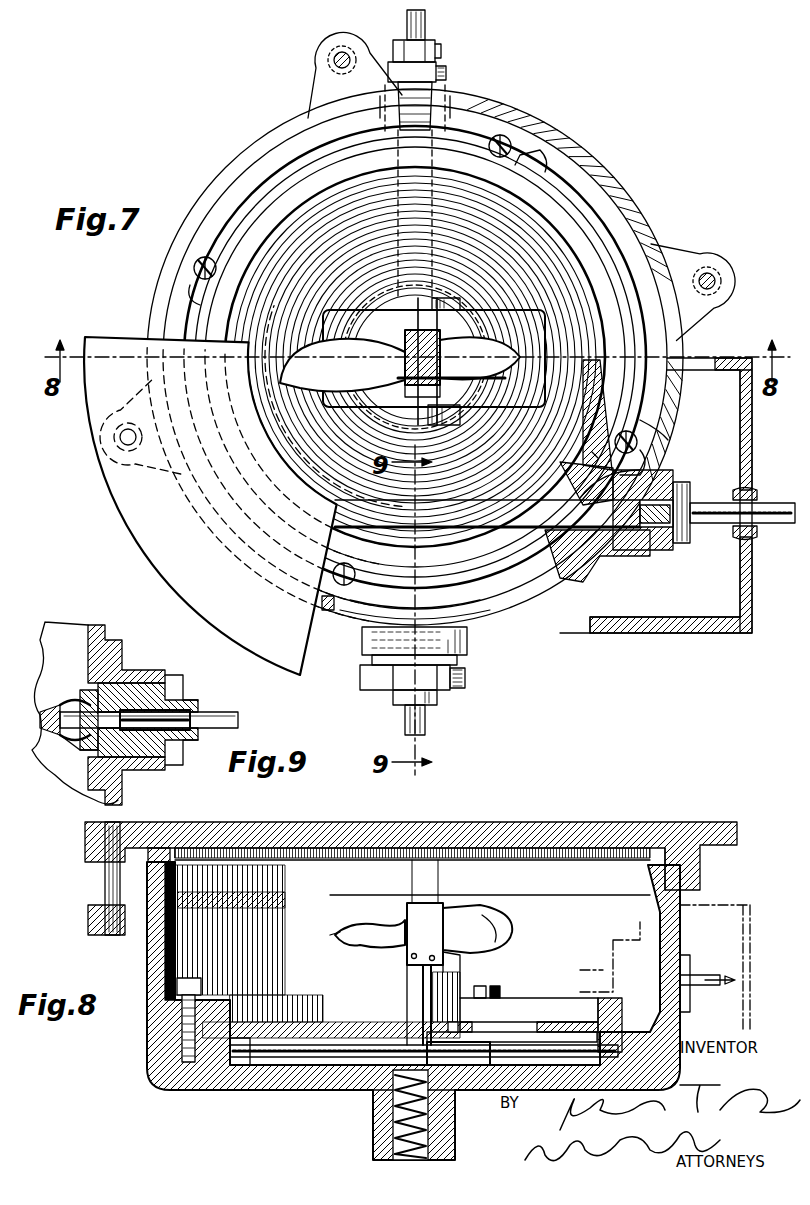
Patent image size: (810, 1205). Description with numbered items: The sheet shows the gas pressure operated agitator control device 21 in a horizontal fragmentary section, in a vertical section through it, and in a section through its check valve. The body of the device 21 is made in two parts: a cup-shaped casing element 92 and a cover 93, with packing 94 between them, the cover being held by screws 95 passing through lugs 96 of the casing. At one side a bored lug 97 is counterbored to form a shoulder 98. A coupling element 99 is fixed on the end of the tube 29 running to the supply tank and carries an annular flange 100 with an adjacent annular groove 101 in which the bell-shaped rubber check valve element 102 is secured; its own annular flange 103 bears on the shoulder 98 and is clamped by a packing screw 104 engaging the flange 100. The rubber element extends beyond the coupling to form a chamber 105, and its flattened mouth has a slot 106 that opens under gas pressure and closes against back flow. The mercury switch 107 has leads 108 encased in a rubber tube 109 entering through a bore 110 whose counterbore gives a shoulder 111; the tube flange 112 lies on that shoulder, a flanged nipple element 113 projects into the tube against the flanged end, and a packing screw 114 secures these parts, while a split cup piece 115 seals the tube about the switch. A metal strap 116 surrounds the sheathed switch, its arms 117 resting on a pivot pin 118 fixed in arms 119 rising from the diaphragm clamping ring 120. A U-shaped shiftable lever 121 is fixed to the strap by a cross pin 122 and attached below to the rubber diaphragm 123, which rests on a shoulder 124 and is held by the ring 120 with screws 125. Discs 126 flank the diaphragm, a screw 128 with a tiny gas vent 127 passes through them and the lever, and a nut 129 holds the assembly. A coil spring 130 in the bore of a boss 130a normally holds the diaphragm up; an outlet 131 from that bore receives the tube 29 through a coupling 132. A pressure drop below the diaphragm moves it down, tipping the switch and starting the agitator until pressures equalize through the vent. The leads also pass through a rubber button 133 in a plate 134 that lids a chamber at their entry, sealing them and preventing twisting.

In FIG. 7, the gas pressure operated agitator control device 21 is at (236, 165).
In FIG. 8, the gas pressure operated agitator control device 21 is at (484, 822).
In FIG. 7, the tube 29 is at (426, 22).
In FIG. 9, the tube 29 is at (228, 715).
In FIG. 7, the cup-shaped casing element 92 is at (545, 600).
In FIG. 8, the cup-shaped casing element 92 is at (150, 1046).
In FIG. 7, the cover 93 is at (292, 642).
In FIG. 8, the cover 93 is at (312, 822).
In FIG. 7, the packing 94 is at (328, 612).
In FIG. 8, the packing 94 is at (160, 842).
In FIG. 7, the screws 95 is at (333, 61).
In FIG. 8, the screws 95 is at (85, 867).
In FIG. 7, the lugs 96 is at (323, 84).
In FIG. 8, the lugs 96 is at (92, 921).
In FIG. 7, the bored lug 97 is at (468, 646).
In FIG. 9, the bored lug 97 is at (118, 683).
In FIG. 7, the shoulder 98 is at (464, 577).
In FIG. 9, the shoulder 98 is at (80, 690).
In FIG. 7, the coupling element 99 is at (430, 702).
In FIG. 9, the coupling element 99 is at (190, 708).
In FIG. 9, the annular flange 100 is at (92, 778).
In FIG. 9, the annular groove 101 is at (82, 760).
In FIG. 7, the rubber check valve element 102 is at (384, 560).
In FIG. 9, the rubber check valve element 102 is at (60, 755).
In FIG. 9, the annular flange 103 is at (140, 697).
In FIG. 7, the packing screw 104 is at (462, 692).
In FIG. 9, the packing screw 104 is at (185, 770).
In FIG. 9, the chamber 105 is at (62, 710).
In FIG. 9, the slot 106 is at (50, 722).
In FIG. 7, the mercury switch 107 is at (478, 340).
In FIG. 8, the mercury switch 107 is at (468, 912).
In FIG. 7, the leads 108 is at (766, 500).
In FIG. 8, the leads 108 is at (330, 943).
In FIG. 7, the rubber tube 109 is at (586, 472).
In FIG. 8, the rubber tube 109 is at (345, 925).
In FIG. 7, the bore 110 is at (666, 476).
In FIG. 7, the shoulder 111 is at (592, 452).
In FIG. 8, the shoulder 111 is at (626, 936).
In FIG. 7, the flange 112 is at (641, 430).
In FIG. 7, the sleeve 113 is at (643, 556).
In FIG. 7, the packing screw 114 is at (686, 548).
In FIG. 8, the packing screw 114 is at (690, 968).
In FIG. 7, the cup piece 115 is at (497, 352).
In FIG. 8, the cup piece 115 is at (498, 930).
In FIG. 7, the metal strap 116 is at (406, 372).
In FIG. 8, the metal strap 116 is at (417, 903).
In FIG. 8, the arms 117 is at (402, 957).
In FIG. 7, the pivot pin 118 is at (440, 396).
In FIG. 8, the pivot pin 118 is at (441, 962).
In FIG. 7, the arms 119 is at (513, 412).
In FIG. 8, the arms 119 is at (490, 977).
In FIG. 7, the diaphragm clamping ring 120 is at (612, 380).
In FIG. 8, the diaphragm clamping ring 120 is at (528, 997).
In FIG. 7, the shiftable lever 121 is at (406, 394).
In FIG. 8, the shiftable lever 121 is at (402, 990).
In FIG. 7, the cross pin 122 is at (402, 422).
In FIG. 8, the cross pin 122 is at (419, 955).
In FIG. 7, the rubber diaphragm 123 is at (546, 378).
In FIG. 8, the rubber diaphragm 123 is at (561, 1035).
In FIG. 8, the shoulder 124 is at (622, 1035).
In FIG. 7, the screws 125 is at (198, 274).
In FIG. 8, the screws 125 is at (168, 982).
In FIG. 7, the discs 126 is at (390, 357).
In FIG. 8, the discs 126 is at (362, 1044).
In FIG. 8, the gas vent 127 is at (458, 1026).
In FIG. 8, the screw 128 is at (490, 1015).
In FIG. 8, the nut 129 is at (454, 1092).
In FIG. 8, the coil spring 130 is at (450, 1127).
In FIG. 8, the boss 130a is at (450, 1148).
In FIG. 7, the outlet 131 is at (452, 162).
In FIG. 8, the outlet 131 is at (378, 1130).
In FIG. 7, the coupling 132 is at (436, 73).
In FIG. 7, the rubber button 133 is at (758, 533).
In FIG. 7, the plate 134 is at (752, 583).
In FIG. 8, the plate 134 is at (752, 962).